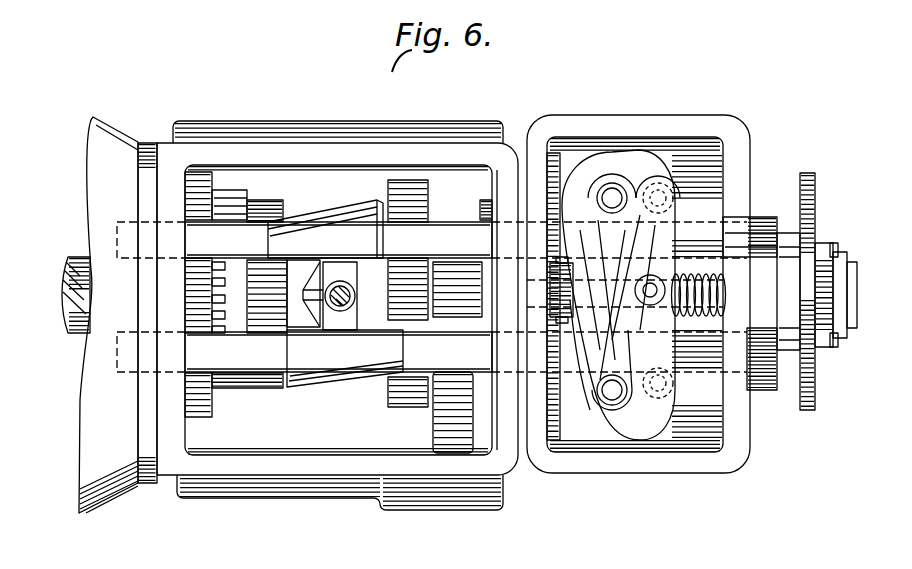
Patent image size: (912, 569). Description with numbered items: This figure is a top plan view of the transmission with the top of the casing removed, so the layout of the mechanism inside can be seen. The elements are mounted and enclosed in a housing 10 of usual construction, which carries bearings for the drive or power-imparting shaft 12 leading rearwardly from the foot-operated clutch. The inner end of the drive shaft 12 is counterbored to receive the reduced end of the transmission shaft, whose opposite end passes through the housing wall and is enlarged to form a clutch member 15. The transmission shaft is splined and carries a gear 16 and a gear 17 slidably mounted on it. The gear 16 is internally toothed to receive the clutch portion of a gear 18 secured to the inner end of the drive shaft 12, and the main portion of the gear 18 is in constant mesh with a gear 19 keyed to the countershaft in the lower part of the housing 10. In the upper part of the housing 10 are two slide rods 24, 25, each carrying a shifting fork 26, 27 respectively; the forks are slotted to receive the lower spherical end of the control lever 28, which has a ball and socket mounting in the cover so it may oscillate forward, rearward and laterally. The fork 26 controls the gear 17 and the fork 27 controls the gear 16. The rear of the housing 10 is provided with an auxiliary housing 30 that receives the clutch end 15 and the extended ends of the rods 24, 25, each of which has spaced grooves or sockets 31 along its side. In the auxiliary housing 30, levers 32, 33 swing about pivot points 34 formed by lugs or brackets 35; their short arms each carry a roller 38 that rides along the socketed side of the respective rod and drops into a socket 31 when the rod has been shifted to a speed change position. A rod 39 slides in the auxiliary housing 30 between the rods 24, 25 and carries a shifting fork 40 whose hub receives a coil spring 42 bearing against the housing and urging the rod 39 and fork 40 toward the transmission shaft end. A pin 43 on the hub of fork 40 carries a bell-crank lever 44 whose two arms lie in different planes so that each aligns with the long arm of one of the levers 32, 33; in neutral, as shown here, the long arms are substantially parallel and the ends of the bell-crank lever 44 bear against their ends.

The housing 10 is at (467, 117).
The drive shaft 12 is at (67, 323).
The clutch member 15 is at (546, 225).
The gear 16 is at (260, 203).
The gear 17 is at (405, 197).
The gear 18 is at (203, 288).
The gear 19 is at (212, 417).
The rod 24 is at (263, 240).
The rod 25 is at (317, 380).
The shifting fork 26 is at (318, 223).
The shifting fork 27 is at (334, 382).
The control lever 28 is at (338, 310).
The auxiliary housing 30 is at (746, 140).
The grooves or sockets 31 is at (700, 223).
The lever 32 is at (573, 380).
The lever 33 is at (572, 183).
The pivot points 34 is at (592, 155).
The lugs or brackets 35 is at (612, 148).
The roller 38 is at (662, 193).
The rod 39 is at (727, 290).
The shifting fork 40 is at (558, 318).
The coil spring 42 is at (713, 297).
The lug or pin 43 is at (723, 378).
The bell-crank lever 44 is at (653, 167).